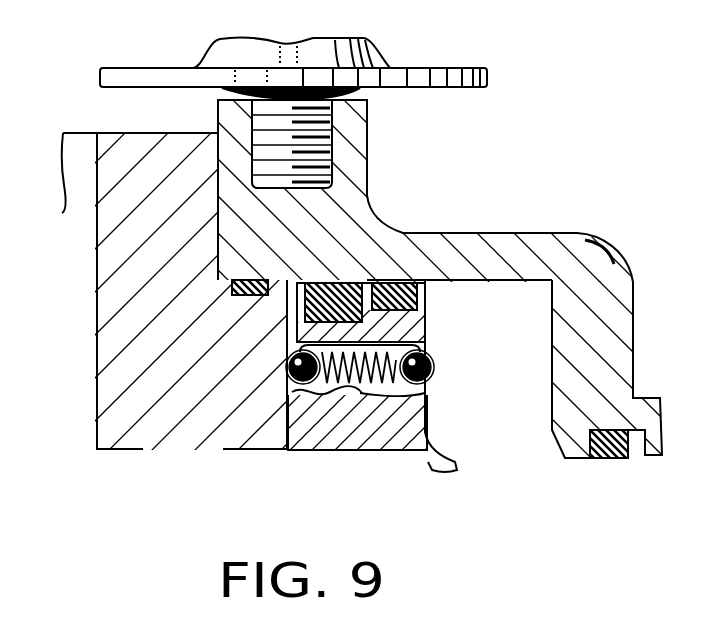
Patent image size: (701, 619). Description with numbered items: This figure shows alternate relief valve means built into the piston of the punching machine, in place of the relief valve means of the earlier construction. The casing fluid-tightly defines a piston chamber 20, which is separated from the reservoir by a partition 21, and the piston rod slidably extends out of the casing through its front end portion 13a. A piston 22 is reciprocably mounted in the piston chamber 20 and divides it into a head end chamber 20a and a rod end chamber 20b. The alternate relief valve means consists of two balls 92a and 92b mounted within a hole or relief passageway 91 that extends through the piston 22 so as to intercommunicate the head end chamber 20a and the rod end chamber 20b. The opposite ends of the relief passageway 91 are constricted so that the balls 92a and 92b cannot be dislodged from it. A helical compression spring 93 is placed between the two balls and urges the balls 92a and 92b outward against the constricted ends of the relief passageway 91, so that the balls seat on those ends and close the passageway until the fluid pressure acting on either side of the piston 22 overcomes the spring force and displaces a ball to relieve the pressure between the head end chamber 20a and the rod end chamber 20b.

The front end portion 13a is at (461, 242).
The piston chamber 20 is at (518, 347).
The head end chamber 20a is at (293, 282).
The rod end chamber 20b is at (531, 420).
The partition 21 is at (127, 367).
The piston 22 is at (428, 418).
The relief passageway 91 is at (378, 395).
The ball 92a is at (430, 358).
The ball 92b is at (290, 360).
The helical compression spring 93 is at (330, 395).